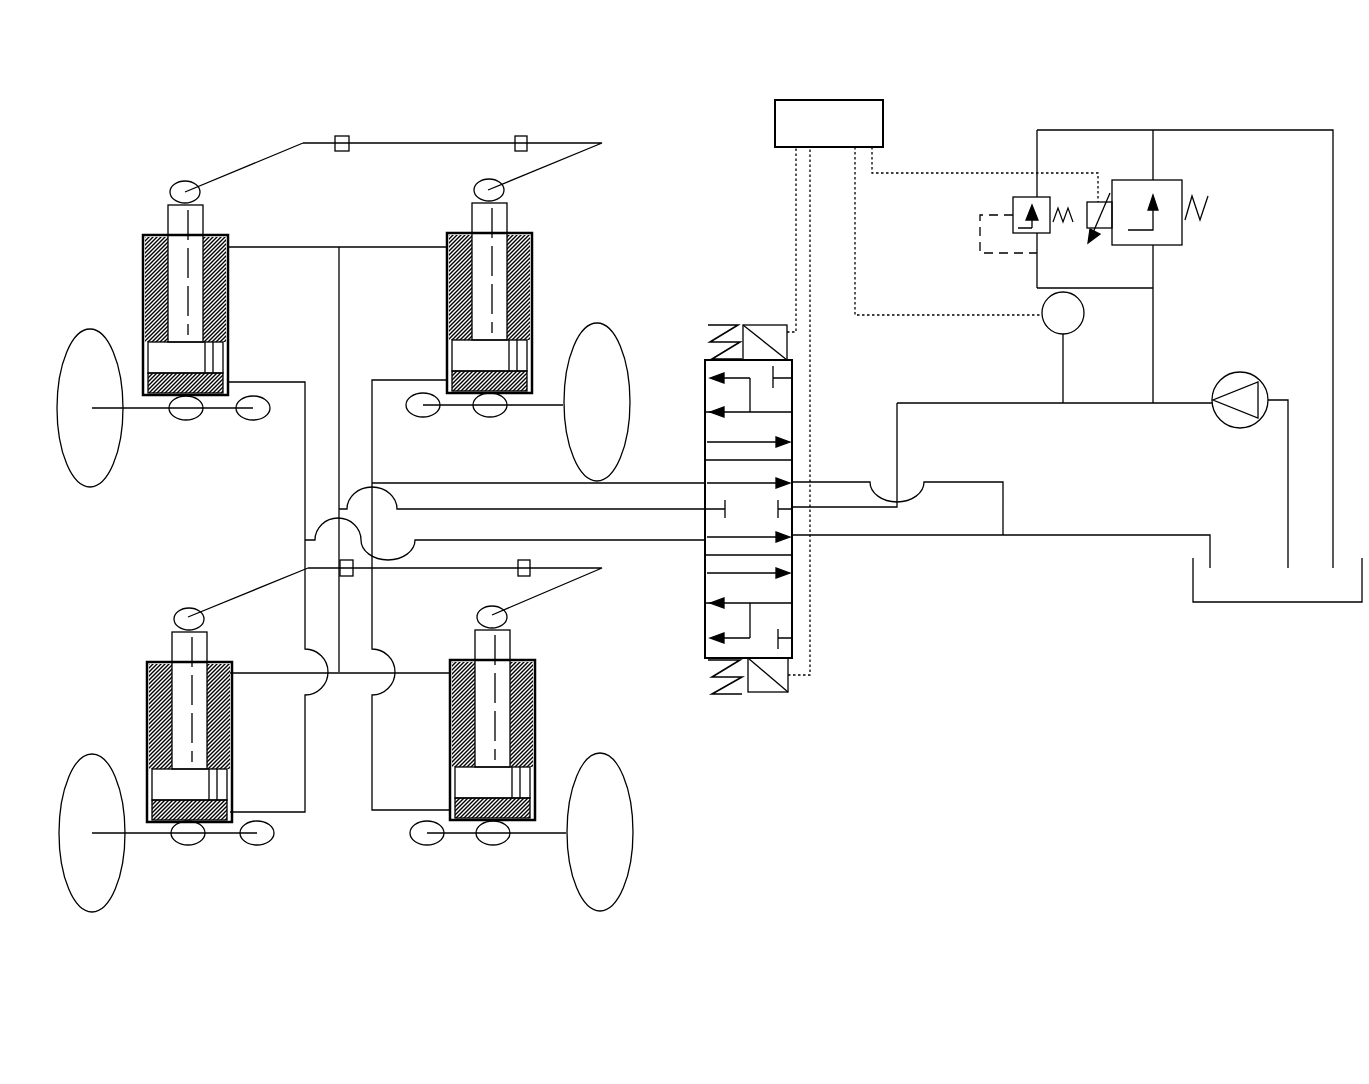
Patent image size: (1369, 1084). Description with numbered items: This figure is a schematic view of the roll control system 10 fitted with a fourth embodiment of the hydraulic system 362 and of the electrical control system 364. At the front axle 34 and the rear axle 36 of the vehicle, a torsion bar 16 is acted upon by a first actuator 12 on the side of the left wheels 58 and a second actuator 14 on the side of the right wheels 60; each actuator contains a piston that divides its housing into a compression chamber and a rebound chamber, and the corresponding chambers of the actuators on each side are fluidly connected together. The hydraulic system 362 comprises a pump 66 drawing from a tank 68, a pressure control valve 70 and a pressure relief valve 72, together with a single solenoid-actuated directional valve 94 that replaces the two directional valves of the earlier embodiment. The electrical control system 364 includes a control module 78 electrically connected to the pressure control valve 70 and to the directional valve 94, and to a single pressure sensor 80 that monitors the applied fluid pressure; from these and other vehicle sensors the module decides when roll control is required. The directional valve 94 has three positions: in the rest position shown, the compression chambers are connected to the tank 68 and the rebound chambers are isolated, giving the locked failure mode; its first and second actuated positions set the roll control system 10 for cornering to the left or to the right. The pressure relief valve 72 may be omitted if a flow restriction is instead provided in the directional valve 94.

The roll control system 10 is at (738, 773).
The first actuator 12 is at (143, 281).
The second actuator 14 is at (537, 296).
The torsion bar 16 is at (412, 150).
The front axle 34 is at (228, 416).
The rear axle 36 is at (230, 846).
The left wheels 58 is at (110, 457).
The right wheels 60 is at (578, 440).
The pump 66 is at (1238, 372).
The tank 68 is at (1275, 592).
The pressure control valve 70 is at (1172, 250).
The pressure relief valve 72 is at (1025, 197).
The control module 78 is at (885, 120).
The pressure sensor 80 is at (1078, 333).
The directional valve 94 is at (705, 578).
The hydraulic system 362 is at (996, 548).
The electrical control system 364 is at (759, 248).